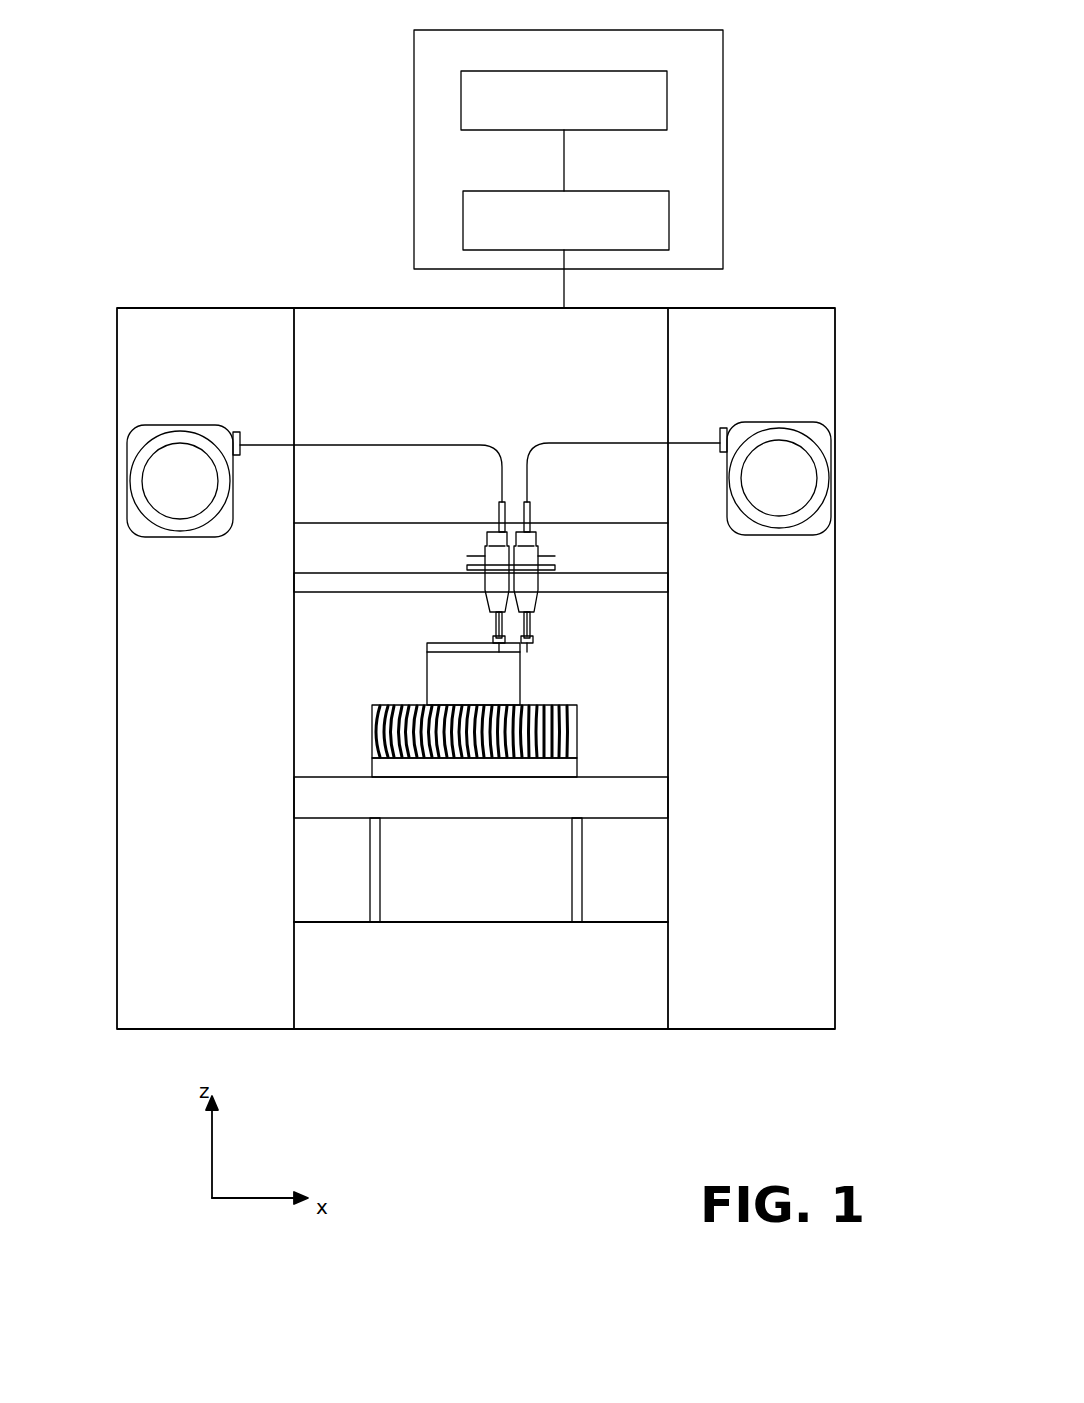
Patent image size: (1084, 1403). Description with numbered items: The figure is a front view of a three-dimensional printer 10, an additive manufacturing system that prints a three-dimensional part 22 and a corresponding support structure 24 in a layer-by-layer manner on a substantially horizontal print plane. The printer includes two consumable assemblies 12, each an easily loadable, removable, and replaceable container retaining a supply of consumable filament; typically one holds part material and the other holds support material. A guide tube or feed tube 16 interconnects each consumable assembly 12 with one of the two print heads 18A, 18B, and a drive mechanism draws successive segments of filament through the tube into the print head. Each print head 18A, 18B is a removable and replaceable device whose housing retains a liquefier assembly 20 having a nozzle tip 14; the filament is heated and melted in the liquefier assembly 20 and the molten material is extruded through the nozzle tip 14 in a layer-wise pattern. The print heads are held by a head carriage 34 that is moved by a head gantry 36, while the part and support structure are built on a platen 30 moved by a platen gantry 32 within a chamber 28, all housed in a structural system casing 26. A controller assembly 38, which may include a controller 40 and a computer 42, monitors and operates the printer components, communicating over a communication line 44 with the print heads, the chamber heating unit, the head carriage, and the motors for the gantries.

The 3D printer 10 is at (218, 92).
The consumable assembly 12 is at (172, 425).
The nozzle tip 14 is at (500, 652).
The guide tube or feed tube 16 is at (310, 445).
The print head 18A is at (480, 557).
The print head 18B is at (546, 556).
The liquefier assembly 20 is at (497, 628).
The 3D part 22 is at (437, 690).
The support structure 24 is at (572, 765).
The system casing 26 is at (294, 689).
The chamber 28 is at (288, 722).
The platen 30 is at (662, 808).
The platen gantry 32 is at (602, 899).
The head carriage 34 is at (467, 567).
The head gantry 36 is at (358, 574).
The controller assembly 38 is at (723, 48).
The controller 40 is at (669, 206).
The computer 42 is at (667, 80).
The communication line 44 is at (566, 280).